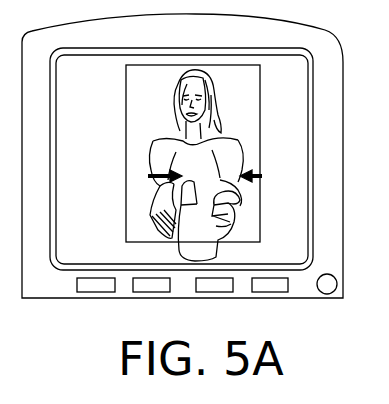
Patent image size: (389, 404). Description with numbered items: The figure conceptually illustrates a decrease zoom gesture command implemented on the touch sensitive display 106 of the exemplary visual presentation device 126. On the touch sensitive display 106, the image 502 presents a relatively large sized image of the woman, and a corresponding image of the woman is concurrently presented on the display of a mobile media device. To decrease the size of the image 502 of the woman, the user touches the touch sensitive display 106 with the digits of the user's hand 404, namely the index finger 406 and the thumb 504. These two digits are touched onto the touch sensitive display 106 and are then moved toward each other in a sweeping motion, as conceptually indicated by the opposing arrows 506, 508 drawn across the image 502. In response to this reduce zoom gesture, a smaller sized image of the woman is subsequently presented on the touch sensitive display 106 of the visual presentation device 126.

The visual presentation device 126 is at (57, 299).
The touch sensitive display 106 is at (98, 257).
The image 502 is at (121, 94).
The thumb 504 is at (192, 193).
The arrow 506 is at (150, 175).
The arrow 508 is at (270, 176).
The hand 404 is at (191, 221).
The index finger 406 is at (206, 202).